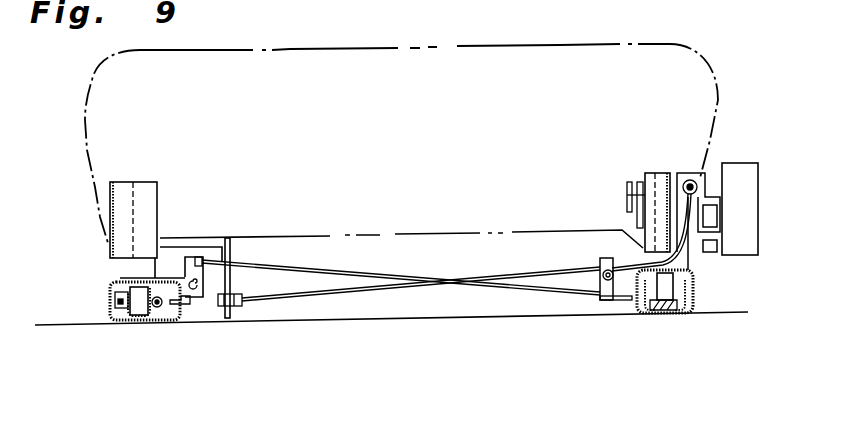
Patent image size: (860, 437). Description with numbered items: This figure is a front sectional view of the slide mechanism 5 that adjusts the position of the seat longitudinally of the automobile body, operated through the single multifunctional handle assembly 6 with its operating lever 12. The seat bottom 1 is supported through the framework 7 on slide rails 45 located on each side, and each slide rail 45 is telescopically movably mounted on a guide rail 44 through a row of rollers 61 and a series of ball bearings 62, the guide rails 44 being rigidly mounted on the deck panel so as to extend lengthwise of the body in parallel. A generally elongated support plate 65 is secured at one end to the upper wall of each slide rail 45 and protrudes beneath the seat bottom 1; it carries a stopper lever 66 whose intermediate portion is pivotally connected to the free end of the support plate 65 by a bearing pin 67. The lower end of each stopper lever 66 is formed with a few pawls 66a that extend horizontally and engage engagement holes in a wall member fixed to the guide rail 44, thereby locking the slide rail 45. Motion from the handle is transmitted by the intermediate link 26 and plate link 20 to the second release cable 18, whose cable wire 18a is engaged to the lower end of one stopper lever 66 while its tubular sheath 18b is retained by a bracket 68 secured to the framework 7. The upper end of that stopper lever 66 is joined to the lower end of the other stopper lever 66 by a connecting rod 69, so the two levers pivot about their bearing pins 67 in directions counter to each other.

The seat bottom 1 is at (398, 48).
The slide mechanism 5 is at (207, 220).
The multifunctional handle assembly 6 is at (728, 137).
The framework 7 is at (110, 200).
The operating lever 12 is at (747, 173).
The second release cable 18 is at (401, 344).
The cable wire 18a is at (210, 302).
The tubular sheath 18b is at (300, 298).
The plate link 20 is at (628, 197).
The intermediate link 26 is at (627, 197).
The guide rail 44 is at (123, 317).
The slide rail 45 is at (110, 292).
The rollers 61 is at (137, 318).
The ball bearings 62 is at (158, 320).
The support plate 65 is at (160, 280).
The stopper lever 66 is at (210, 262).
The pawls 66a is at (187, 308).
The bearing pin 67 is at (231, 266).
The bracket 68 is at (233, 240).
The connecting rod 69 is at (580, 288).